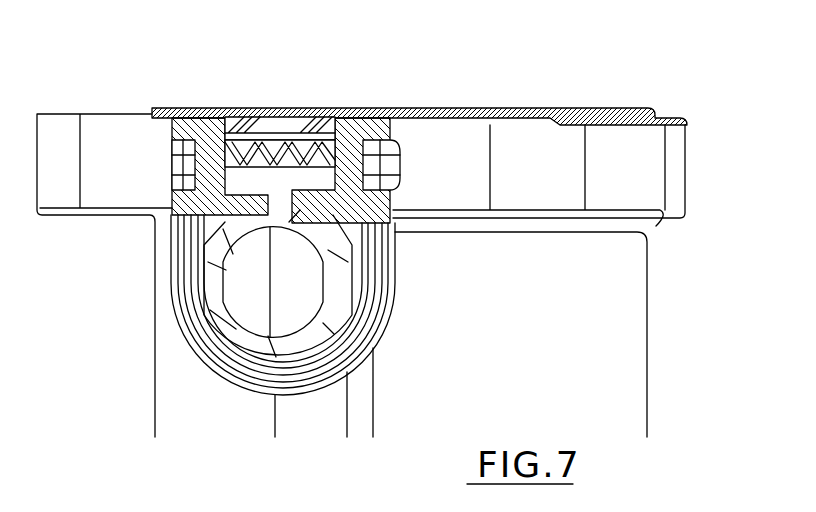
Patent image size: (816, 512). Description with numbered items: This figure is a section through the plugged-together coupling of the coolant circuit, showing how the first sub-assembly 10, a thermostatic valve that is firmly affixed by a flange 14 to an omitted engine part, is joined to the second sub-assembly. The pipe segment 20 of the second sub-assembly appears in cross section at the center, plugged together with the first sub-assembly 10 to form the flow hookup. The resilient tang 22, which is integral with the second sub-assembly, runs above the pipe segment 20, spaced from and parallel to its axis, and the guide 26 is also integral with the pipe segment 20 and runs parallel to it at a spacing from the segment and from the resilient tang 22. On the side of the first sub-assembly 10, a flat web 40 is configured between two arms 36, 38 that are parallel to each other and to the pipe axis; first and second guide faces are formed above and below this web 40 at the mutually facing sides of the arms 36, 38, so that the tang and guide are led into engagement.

The first sub-assembly 10 is at (655, 307).
The flange 14 is at (530, 145).
The pipe segment 20 is at (372, 347).
The resilient tang 22 is at (249, 133).
The guide 26 is at (167, 228).
The arm 36 is at (361, 140).
The arm 38 is at (213, 112).
The flat web 40 is at (285, 145).